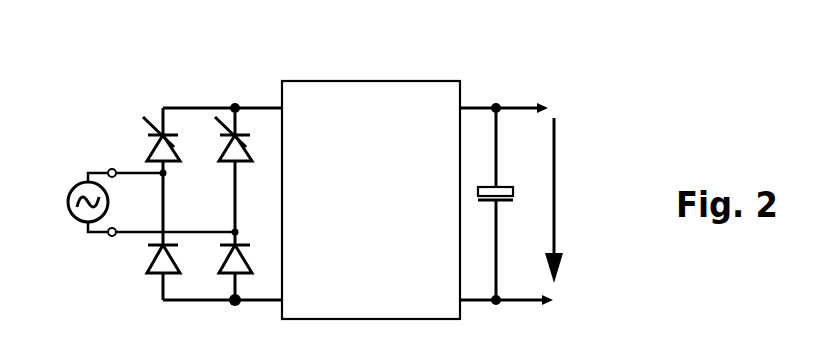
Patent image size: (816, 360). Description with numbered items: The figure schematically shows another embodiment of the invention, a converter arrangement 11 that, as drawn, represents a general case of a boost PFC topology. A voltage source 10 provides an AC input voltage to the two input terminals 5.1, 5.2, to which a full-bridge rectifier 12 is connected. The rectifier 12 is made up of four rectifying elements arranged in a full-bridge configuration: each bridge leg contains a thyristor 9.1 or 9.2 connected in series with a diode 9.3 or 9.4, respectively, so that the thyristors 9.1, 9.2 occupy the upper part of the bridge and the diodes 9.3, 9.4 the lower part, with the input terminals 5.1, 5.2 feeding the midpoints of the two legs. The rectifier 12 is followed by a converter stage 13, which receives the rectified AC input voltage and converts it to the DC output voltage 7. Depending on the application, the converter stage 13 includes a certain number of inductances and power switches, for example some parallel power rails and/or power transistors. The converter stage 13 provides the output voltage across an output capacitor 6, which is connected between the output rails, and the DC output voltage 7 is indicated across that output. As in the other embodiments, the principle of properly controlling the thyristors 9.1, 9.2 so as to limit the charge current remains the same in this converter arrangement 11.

The converter arrangement 11 is at (90, 44).
The full-bridge rectifier 12 is at (186, 78).
The converter stage 13 is at (383, 80).
The voltage source 10 is at (68, 194).
The input terminal 5.1 is at (109, 170).
The input terminal 5.2 is at (107, 237).
The thyristor 9.1 is at (152, 147).
The thyristor 9.2 is at (248, 148).
The diode 9.3 is at (150, 259).
The diode 9.4 is at (245, 278).
The output capacitor 6 is at (508, 185).
The DC output voltage 7 is at (558, 198).